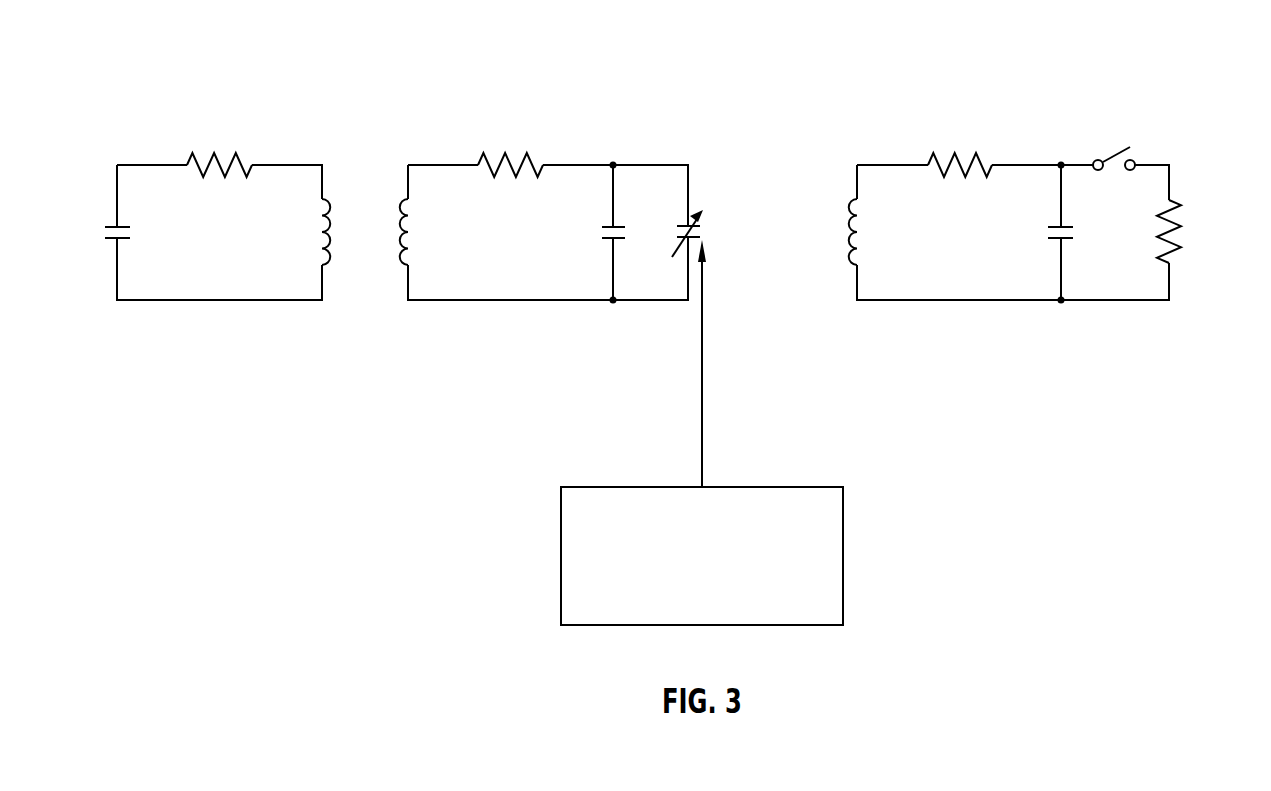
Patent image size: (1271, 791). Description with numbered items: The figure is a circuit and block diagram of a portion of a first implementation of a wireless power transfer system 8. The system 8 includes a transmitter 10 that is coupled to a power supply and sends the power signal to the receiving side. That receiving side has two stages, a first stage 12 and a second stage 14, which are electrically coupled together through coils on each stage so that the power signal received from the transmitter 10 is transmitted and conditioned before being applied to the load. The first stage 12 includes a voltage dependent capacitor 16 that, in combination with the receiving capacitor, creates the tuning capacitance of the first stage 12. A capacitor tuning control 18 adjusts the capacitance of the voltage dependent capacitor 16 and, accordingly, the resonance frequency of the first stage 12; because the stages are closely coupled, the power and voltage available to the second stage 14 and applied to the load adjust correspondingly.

The WPT system 8 is at (1205, 40).
The transmitter 10 is at (163, 165).
The first stage 12 is at (455, 300).
The second stage 14 is at (1120, 300).
The voltage dependent capacitor 16 is at (705, 230).
The capacitor tuning control 18 is at (798, 486).